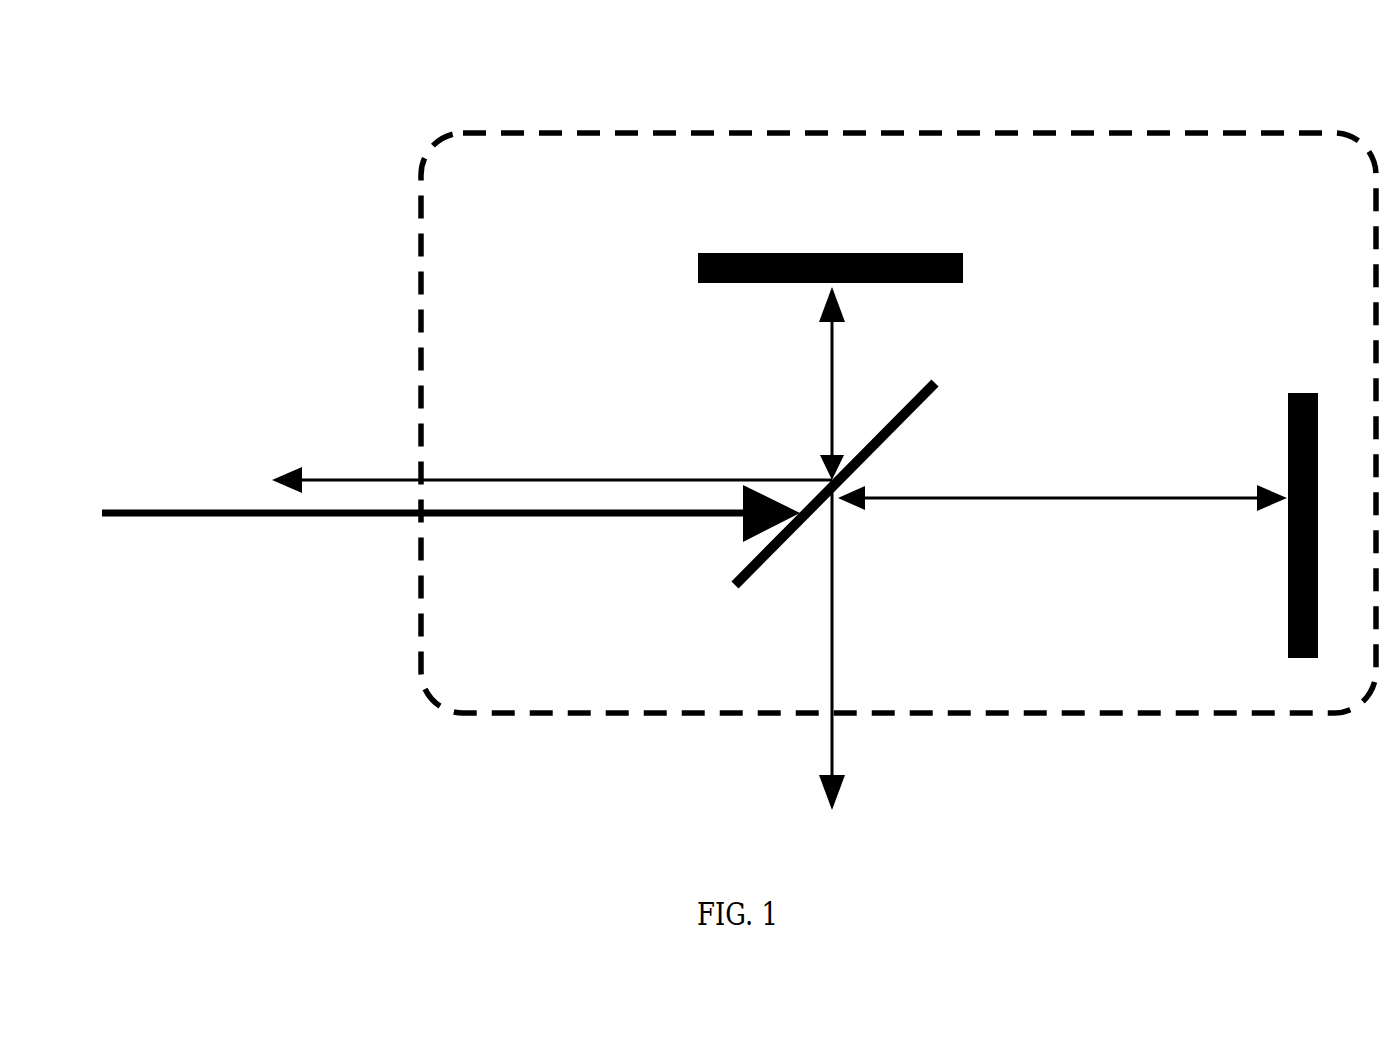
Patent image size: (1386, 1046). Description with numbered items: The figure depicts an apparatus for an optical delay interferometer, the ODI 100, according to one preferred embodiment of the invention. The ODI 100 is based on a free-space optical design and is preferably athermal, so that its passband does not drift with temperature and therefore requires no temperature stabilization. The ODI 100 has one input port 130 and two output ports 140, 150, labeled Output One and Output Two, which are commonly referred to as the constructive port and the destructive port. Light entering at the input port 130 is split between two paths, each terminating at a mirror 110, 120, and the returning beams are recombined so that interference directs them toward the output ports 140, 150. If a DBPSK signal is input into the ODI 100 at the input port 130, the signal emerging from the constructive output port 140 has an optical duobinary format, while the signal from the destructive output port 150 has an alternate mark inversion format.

The ODI 100 is at (258, 133).
The first mirror (fixed arm) 110 is at (838, 379).
The second mirror (delay arm) 120 is at (1052, 497).
The input port 130 is at (417, 517).
The output port 140 is at (417, 477).
The output port 150 is at (838, 720).